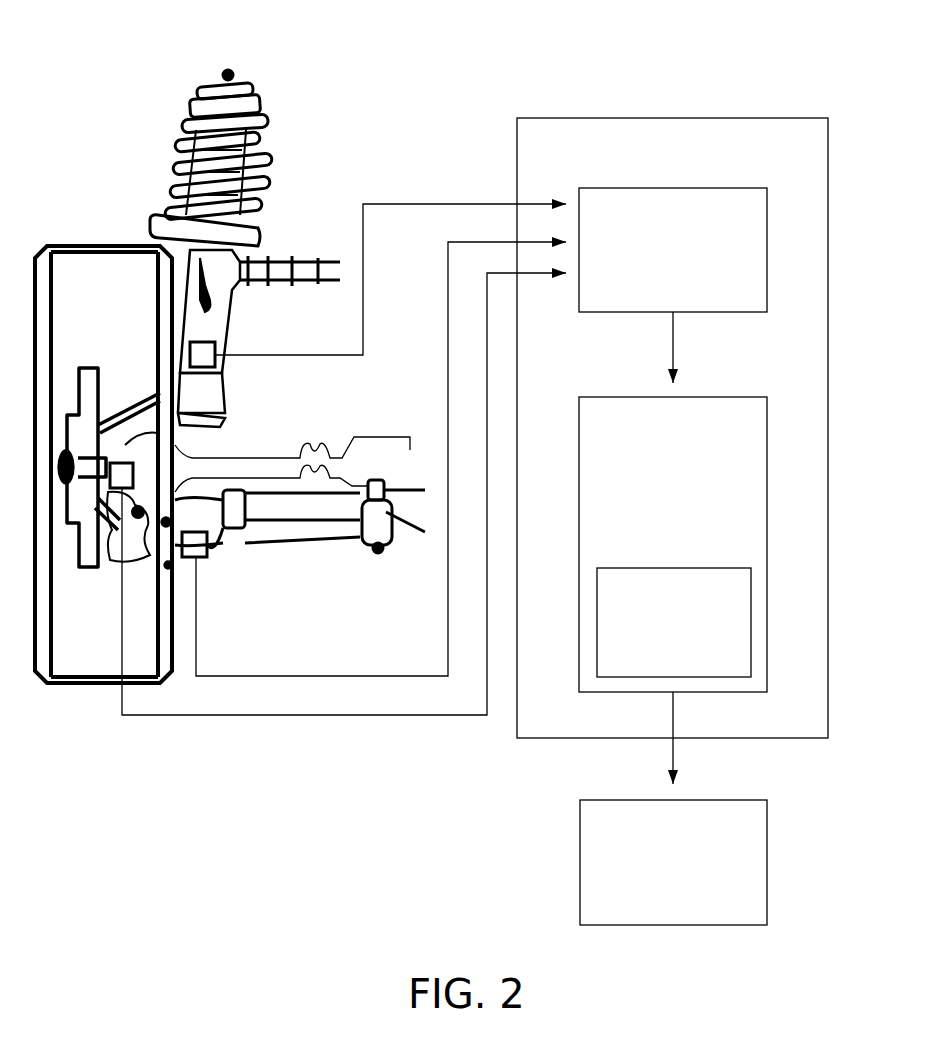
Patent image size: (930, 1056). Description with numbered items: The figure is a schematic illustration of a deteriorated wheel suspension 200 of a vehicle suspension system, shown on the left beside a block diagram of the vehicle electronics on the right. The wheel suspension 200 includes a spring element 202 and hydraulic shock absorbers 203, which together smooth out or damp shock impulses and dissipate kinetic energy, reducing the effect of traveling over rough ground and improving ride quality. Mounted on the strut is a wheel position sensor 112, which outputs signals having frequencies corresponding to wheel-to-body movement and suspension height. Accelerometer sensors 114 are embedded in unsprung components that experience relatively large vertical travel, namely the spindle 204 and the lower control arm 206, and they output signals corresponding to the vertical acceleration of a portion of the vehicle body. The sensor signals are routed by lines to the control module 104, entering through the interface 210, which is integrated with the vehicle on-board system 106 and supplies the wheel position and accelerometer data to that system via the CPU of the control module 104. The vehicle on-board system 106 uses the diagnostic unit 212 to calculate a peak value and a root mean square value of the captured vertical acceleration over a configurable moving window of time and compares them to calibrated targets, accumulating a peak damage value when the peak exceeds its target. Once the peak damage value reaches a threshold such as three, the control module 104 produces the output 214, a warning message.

The wheel suspension 200 is at (52, 118).
The spring element 202 is at (270, 190).
The hydraulic shock absorbers 203 is at (255, 228).
The wheel position sensors 112 is at (218, 363).
The accelerometer sensors 114 is at (112, 463).
The spindle 204 is at (200, 459).
The lower control arm 206 is at (202, 568).
The control module 104 is at (672, 428).
The interface 210 is at (673, 250).
The vehicle on-board system 106 is at (673, 544).
The diagnostic unit 212 is at (674, 622).
The output 214 is at (673, 862).